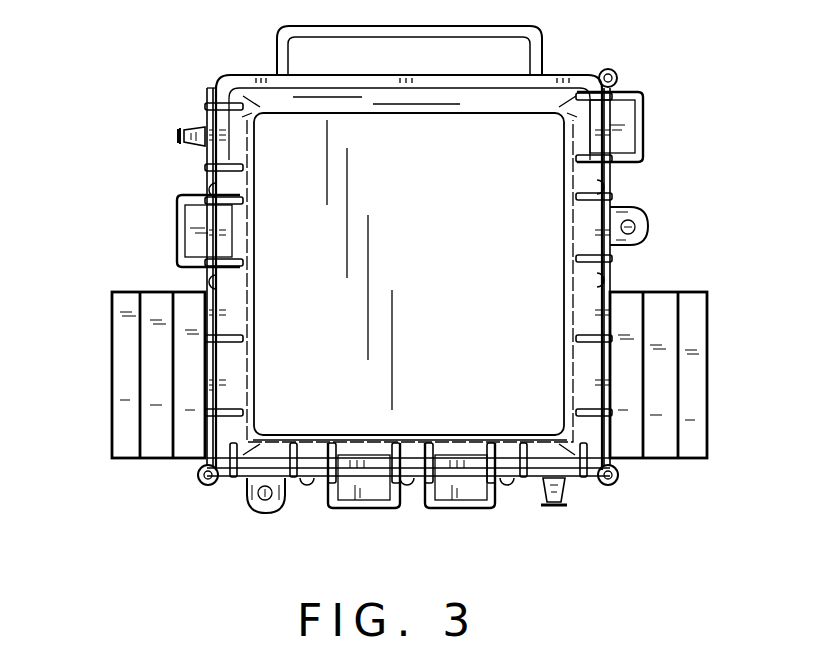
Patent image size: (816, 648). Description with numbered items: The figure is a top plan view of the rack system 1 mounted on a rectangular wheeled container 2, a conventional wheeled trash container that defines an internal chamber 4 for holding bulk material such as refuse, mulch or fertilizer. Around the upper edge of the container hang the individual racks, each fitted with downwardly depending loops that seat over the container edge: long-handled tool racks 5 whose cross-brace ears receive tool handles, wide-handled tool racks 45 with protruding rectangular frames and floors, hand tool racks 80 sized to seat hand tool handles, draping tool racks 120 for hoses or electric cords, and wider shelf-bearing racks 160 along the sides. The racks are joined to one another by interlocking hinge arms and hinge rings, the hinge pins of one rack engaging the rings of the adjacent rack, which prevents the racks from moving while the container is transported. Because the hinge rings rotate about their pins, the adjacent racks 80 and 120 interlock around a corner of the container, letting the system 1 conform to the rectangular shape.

The rack system 1 is at (170, 107).
The rectangular wheeled container 2 is at (564, 75).
The internal chamber 4 is at (470, 300).
The long-handled tool rack 5 is at (647, 230).
The wide-handled tool rack 45 is at (647, 128).
The hand tool rack 80 is at (176, 235).
The draping tool rack 120 is at (184, 145).
The shelf-bearing rack 160 is at (708, 415).